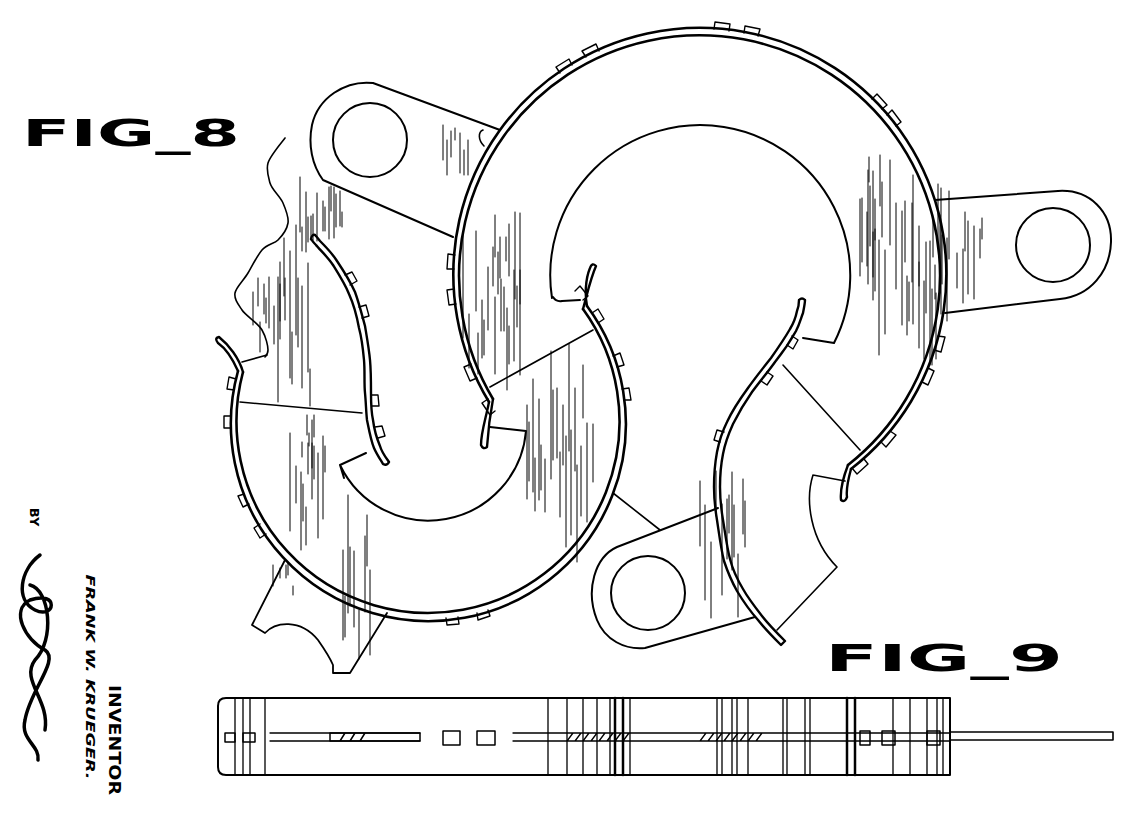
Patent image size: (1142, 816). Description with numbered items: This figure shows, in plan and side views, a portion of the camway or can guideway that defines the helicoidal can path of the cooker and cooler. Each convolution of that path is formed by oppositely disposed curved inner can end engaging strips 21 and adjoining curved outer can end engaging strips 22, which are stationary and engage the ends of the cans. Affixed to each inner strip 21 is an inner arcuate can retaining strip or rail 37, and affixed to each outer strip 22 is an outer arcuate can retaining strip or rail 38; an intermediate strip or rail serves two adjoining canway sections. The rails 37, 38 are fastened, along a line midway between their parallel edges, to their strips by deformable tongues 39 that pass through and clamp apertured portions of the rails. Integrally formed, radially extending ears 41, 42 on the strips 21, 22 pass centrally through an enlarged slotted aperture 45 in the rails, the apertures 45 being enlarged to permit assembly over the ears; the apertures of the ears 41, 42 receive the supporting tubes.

In FIG. 8, the inner can end engaging strip 21 is at (835, 568).
In FIG. 8, the outer can end engaging strip 22 is at (262, 262).
In FIG. 8, the inner arcuate can retaining strip or rail 37 is at (412, 620).
In FIG. 9, the inner arcuate can retaining strip or rail 37 is at (735, 700).
In FIG. 8, the outer arcuate can retaining strip or rail 38 is at (915, 400).
In FIG. 9, the outer arcuate can retaining strip or rail 38 is at (658, 702).
In FIG. 8, the deformable tongue 39 is at (893, 443).
In FIG. 9, the deformable tongue 39 is at (480, 733).
In FIG. 8, the ear 41 is at (693, 620).
In FIG. 9, the ear 41 is at (318, 745).
In FIG. 8, the ear 42 is at (433, 120).
In FIG. 9, the ear 42 is at (975, 741).
In FIG. 8, the enlarged slotted aperture 45 is at (487, 137).
In FIG. 9, the enlarged slotted aperture 45 is at (405, 745).